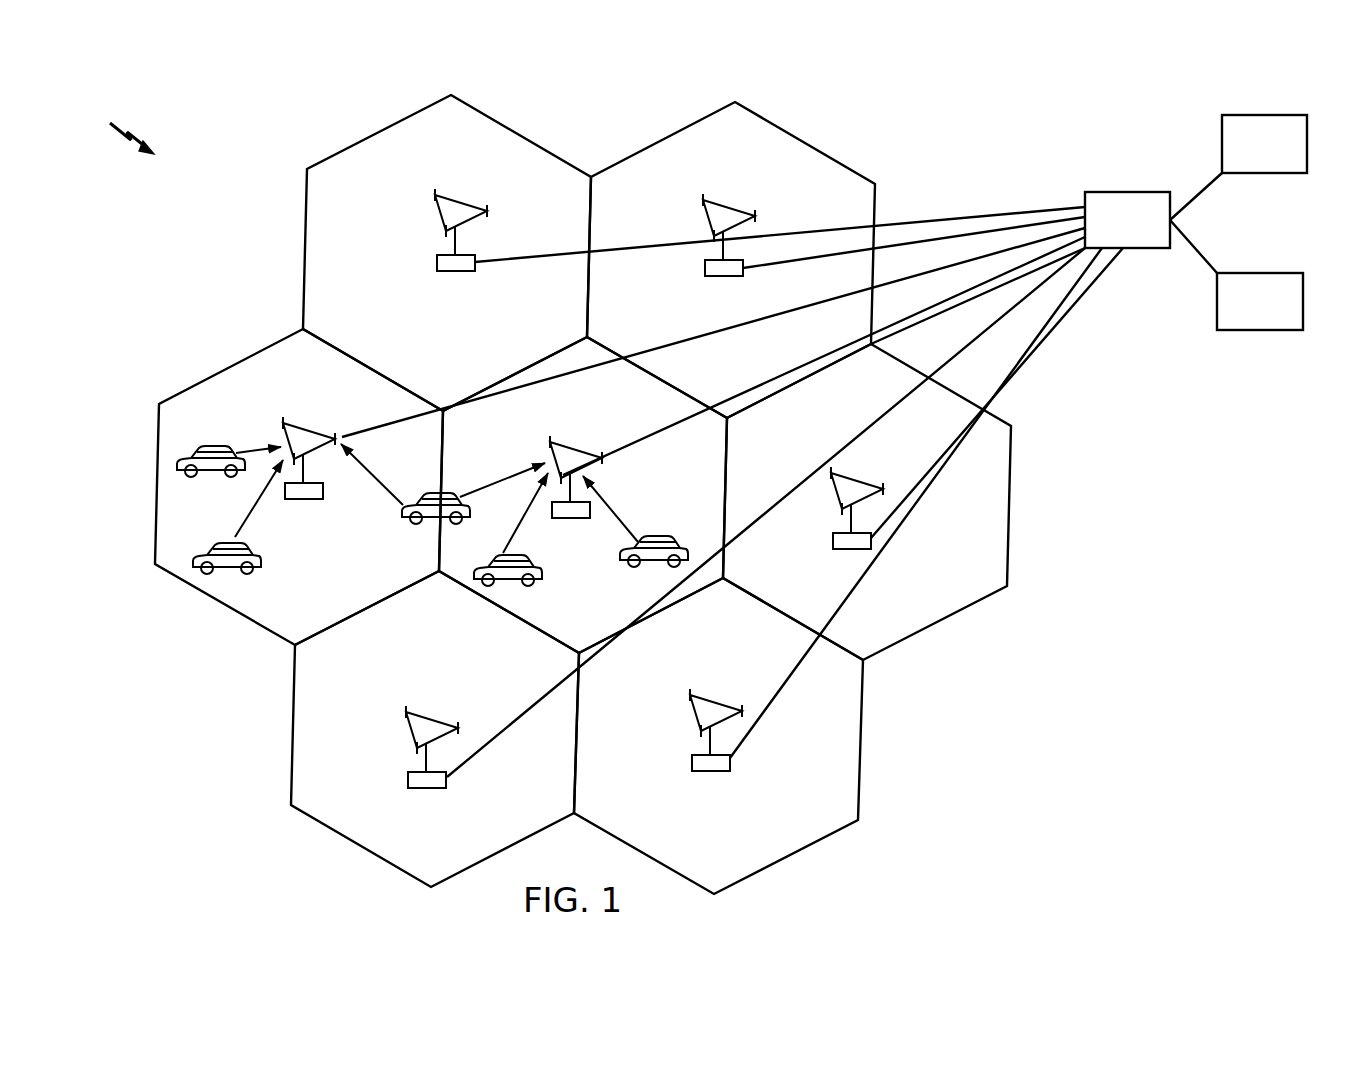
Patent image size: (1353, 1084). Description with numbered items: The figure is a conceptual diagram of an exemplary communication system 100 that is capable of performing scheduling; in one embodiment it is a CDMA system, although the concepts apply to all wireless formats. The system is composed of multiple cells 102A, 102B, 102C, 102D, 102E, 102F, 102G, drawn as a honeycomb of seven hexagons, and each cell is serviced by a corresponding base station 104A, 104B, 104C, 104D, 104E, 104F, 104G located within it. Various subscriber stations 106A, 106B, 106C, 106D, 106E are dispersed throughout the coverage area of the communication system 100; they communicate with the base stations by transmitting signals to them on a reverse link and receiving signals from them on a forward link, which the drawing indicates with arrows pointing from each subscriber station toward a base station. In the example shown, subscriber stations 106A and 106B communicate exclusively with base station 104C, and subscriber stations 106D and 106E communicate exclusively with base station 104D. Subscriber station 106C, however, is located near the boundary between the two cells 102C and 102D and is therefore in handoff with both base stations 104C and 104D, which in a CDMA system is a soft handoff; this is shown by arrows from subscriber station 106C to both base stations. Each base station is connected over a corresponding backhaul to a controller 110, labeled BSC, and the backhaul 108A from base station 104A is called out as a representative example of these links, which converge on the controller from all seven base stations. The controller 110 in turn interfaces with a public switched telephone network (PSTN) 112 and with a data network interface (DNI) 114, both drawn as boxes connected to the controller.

The communication system 100 is at (112, 127).
The cell 102A is at (389, 130).
The cell 102B is at (797, 138).
The cell 102C is at (226, 371).
The cell 102D is at (636, 400).
The cell 102E is at (1008, 498).
The cell 102F is at (293, 729).
The cell 102G is at (859, 712).
The base station 104A is at (440, 197).
The base station 104B is at (709, 205).
The base station 104C is at (287, 431).
The base station 104D is at (560, 441).
The base station 104E is at (835, 471).
The base station 104F is at (407, 713).
The base station 104G is at (699, 700).
The subscriber station 106A is at (203, 447).
The subscriber station 106B is at (230, 543).
The subscriber station 106C is at (423, 493).
The subscriber station 106D is at (528, 563).
The subscriber station 106E is at (670, 520).
The backhaul 108A is at (1016, 210).
The controller 110 is at (1117, 192).
The public switched telephone network (PSTN) 112 is at (1267, 175).
The data network interface (DNI) 114 is at (1262, 332).